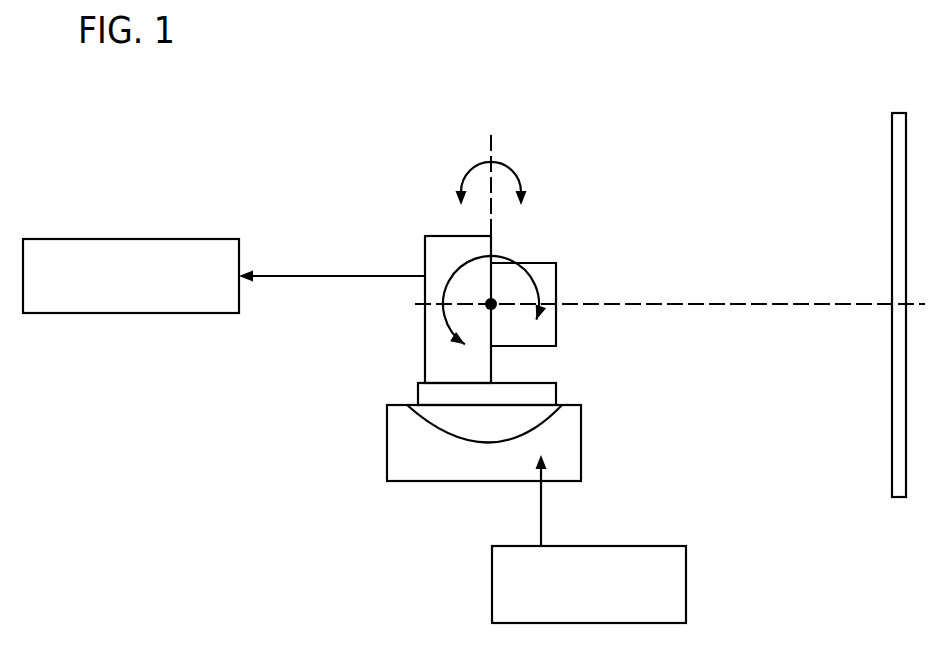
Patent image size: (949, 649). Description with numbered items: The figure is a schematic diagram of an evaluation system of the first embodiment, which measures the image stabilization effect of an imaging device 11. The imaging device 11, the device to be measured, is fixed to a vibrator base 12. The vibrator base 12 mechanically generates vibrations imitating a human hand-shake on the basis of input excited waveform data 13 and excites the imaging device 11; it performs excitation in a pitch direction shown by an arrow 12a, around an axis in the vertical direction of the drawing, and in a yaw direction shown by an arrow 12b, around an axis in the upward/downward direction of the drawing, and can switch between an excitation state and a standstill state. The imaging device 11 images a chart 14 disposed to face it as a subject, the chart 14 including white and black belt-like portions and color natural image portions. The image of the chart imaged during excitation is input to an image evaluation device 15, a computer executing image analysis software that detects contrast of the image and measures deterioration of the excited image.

The imaging device 11 is at (425, 249).
The vibrator base 12 is at (387, 461).
The arrow 12a is at (493, 256).
The arrow 12b is at (501, 165).
The excited waveform data 13 is at (627, 546).
The chart 14 is at (892, 152).
The image evaluation device 15 is at (178, 239).